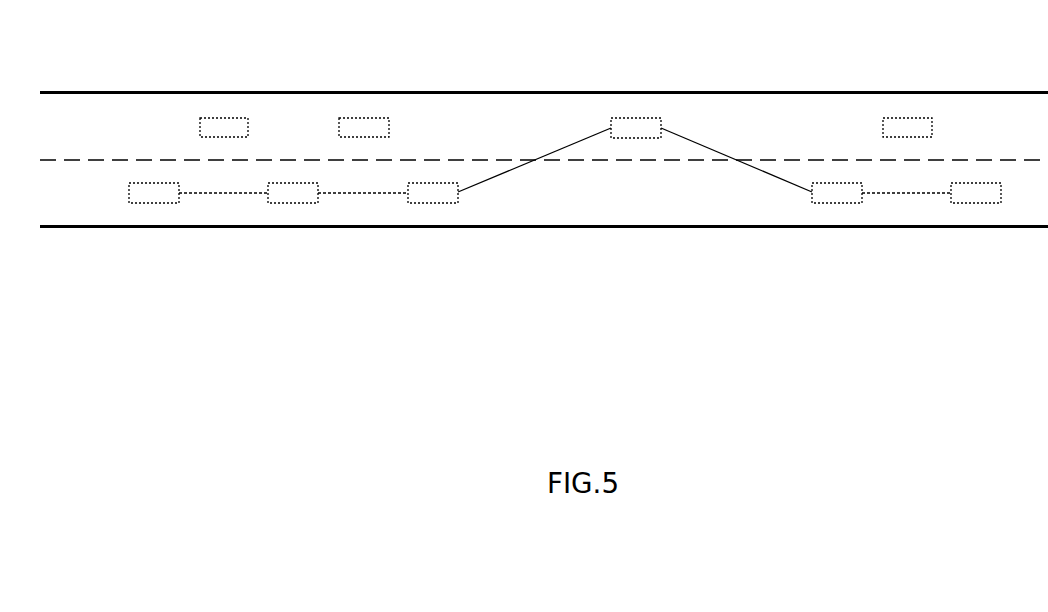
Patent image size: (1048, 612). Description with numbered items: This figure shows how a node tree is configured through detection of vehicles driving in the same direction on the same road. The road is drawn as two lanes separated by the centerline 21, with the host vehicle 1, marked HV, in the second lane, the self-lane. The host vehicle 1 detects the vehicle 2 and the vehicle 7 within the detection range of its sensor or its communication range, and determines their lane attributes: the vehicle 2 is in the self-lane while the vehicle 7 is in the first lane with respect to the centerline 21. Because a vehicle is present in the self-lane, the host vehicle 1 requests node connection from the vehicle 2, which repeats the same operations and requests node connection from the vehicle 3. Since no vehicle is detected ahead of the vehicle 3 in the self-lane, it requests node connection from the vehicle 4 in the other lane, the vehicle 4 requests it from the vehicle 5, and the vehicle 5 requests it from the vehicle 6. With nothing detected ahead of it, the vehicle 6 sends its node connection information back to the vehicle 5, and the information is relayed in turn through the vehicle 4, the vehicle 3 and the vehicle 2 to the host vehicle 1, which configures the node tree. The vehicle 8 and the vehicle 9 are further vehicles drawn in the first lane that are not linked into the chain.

The host vehicle 1 is at (154, 206).
The vehicle 2 is at (293, 193).
The vehicle 3 is at (433, 193).
The vehicle 4 is at (636, 128).
The vehicle 5 is at (837, 193).
The vehicle 6 is at (976, 193).
The vehicle 7 is at (224, 127).
The eighth vehicle 8 is at (364, 127).
The ninth vehicle 9 is at (907, 127).
The centerline 21 is at (581, 92).